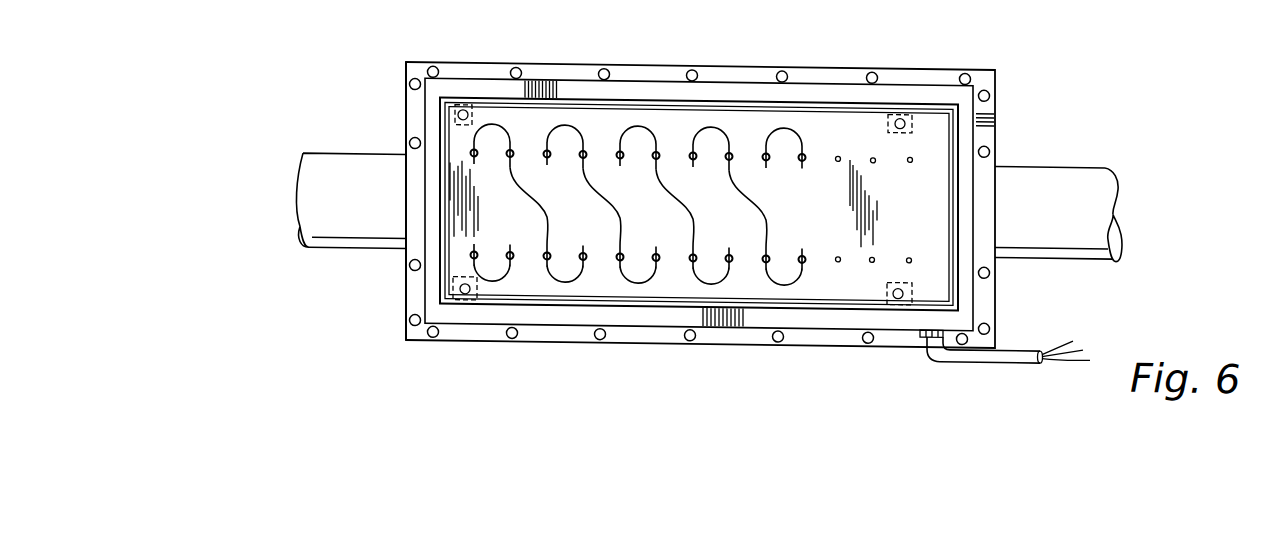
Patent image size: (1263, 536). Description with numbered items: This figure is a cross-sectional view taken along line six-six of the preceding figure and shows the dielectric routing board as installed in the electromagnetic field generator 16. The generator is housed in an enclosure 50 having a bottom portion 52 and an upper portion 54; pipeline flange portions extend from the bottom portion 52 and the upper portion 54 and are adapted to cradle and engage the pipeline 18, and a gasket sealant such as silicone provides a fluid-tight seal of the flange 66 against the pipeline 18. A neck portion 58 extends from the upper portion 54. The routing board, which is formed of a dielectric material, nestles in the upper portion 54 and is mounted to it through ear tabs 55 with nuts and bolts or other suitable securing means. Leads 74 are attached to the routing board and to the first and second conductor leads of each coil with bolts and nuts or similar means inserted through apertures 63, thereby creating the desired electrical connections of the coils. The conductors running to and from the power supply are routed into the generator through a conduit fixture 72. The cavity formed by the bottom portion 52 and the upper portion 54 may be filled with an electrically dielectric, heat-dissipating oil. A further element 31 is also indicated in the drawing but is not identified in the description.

The electromagnetic field generator 16 is at (376, 44).
The pipeline 18 is at (1113, 183).
The pipe end 31 is at (1122, 240).
The enclosure 50 is at (397, 300).
The bottom portion 52 is at (405, 101).
The upper portion 54 is at (405, 141).
The ear tabs 55 is at (470, 111).
The neck portion 58 is at (960, 98).
The apertures 63 is at (837, 151).
The flange 66 is at (924, 66).
The conduit fixture 72 is at (995, 358).
The leads 74 is at (567, 121).